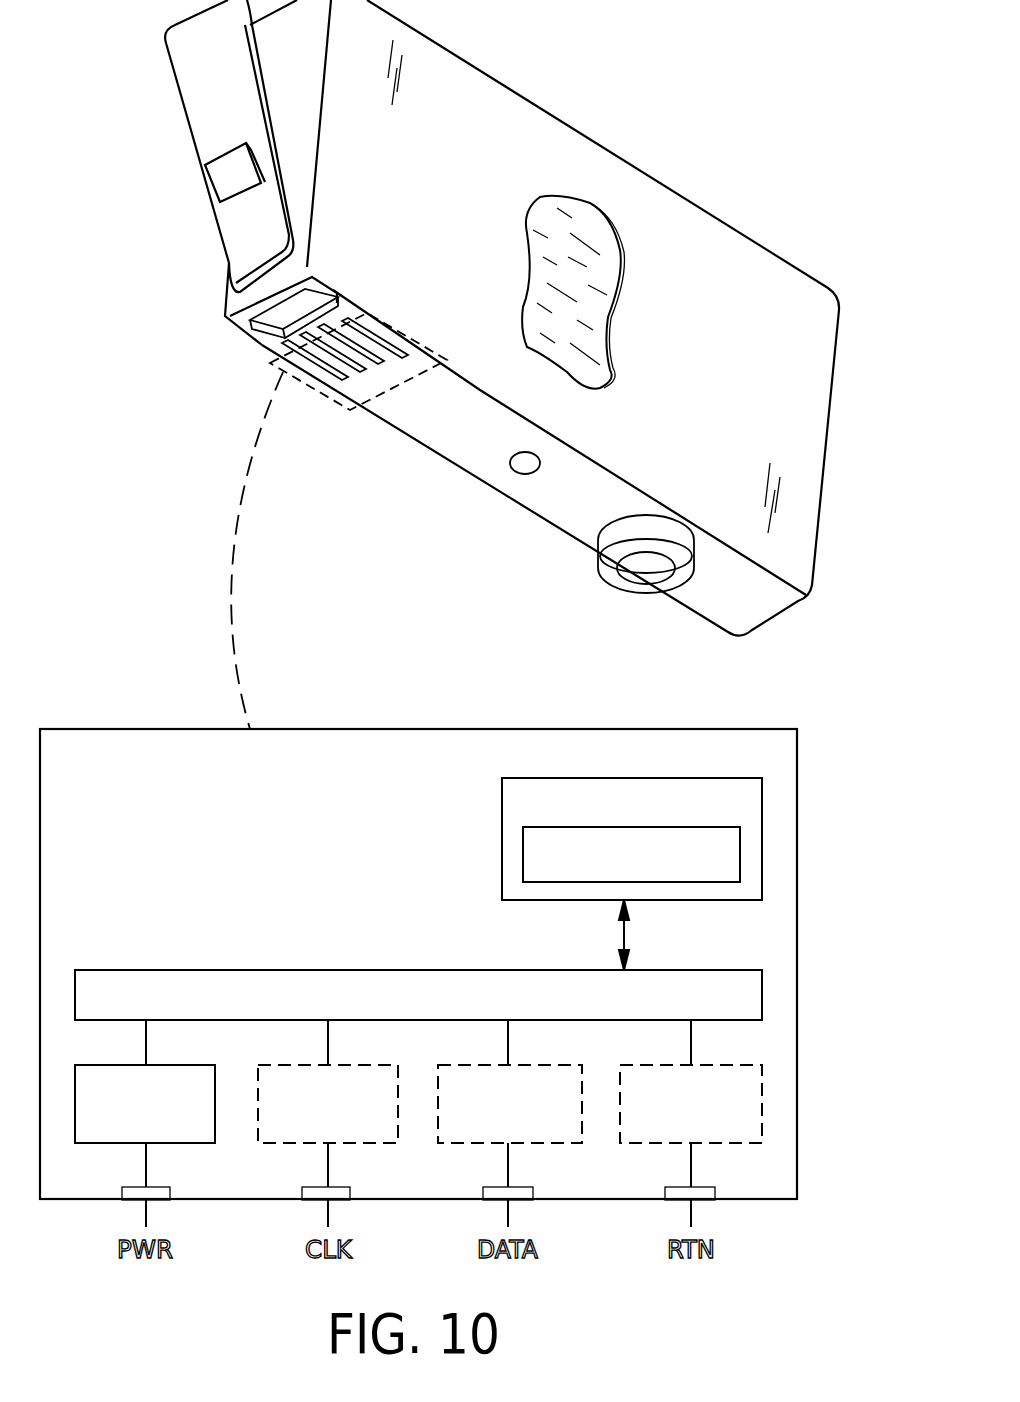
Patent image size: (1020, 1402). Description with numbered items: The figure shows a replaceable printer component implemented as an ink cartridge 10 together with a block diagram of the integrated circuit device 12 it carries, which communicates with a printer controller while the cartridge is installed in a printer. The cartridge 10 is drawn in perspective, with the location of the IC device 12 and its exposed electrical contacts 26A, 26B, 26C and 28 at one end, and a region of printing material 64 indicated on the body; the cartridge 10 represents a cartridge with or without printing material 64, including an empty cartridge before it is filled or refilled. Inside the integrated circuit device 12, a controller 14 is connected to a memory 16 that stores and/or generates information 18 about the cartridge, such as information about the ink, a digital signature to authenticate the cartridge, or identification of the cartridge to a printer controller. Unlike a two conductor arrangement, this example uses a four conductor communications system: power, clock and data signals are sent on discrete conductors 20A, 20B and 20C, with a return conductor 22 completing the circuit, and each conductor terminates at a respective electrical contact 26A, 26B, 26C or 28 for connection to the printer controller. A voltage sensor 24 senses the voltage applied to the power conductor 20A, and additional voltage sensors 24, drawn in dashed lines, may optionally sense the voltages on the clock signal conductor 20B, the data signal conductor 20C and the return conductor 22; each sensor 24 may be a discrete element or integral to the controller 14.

The ink cartridge 10 is at (203, 333).
The integrated circuit device 12 is at (385, 375).
The controller 14 is at (233, 978).
The memory 16 is at (663, 790).
The information 18 is at (652, 837).
The power conductor 20A is at (145, 1167).
The clock signal conductor 20B is at (327, 1167).
The data signal conductor 20C is at (507, 1167).
The return conductor 22 is at (688, 1167).
The voltage sensor 24 is at (175, 1070).
The electrical contact 26A is at (312, 365).
The electrical contact 26B is at (330, 357).
The electrical contact 26C is at (348, 350).
The electrical contact 28 is at (372, 343).
The printing material 64 is at (595, 305).